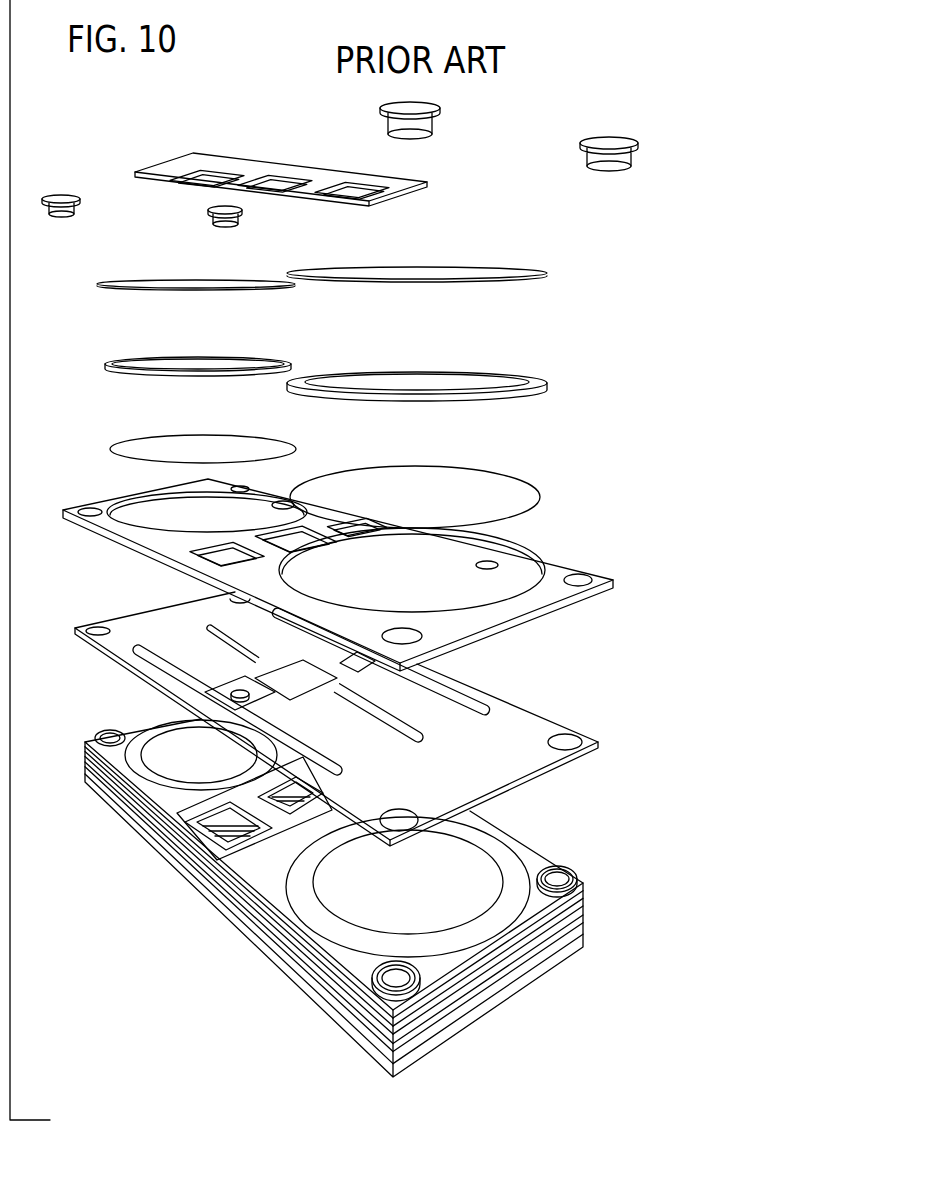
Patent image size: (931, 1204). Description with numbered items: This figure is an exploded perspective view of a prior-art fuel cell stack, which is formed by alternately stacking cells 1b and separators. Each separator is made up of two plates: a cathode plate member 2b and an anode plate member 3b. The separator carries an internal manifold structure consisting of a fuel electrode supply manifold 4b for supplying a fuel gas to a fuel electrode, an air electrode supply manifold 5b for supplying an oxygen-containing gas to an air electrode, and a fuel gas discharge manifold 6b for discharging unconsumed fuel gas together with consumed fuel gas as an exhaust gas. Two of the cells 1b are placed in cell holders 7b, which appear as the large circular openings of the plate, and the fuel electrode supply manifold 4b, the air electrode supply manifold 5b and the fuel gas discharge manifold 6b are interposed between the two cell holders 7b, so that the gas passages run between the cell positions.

The cell 1b is at (122, 283).
The cathode plate member 2b is at (603, 733).
The anode plate member 3b is at (366, 565).
The fuel electrode supply manifold 4b is at (220, 558).
The air electrode supply manifold 5b is at (290, 545).
The fuel gas discharge manifold 6b is at (368, 528).
The cell holder 7b is at (148, 512).